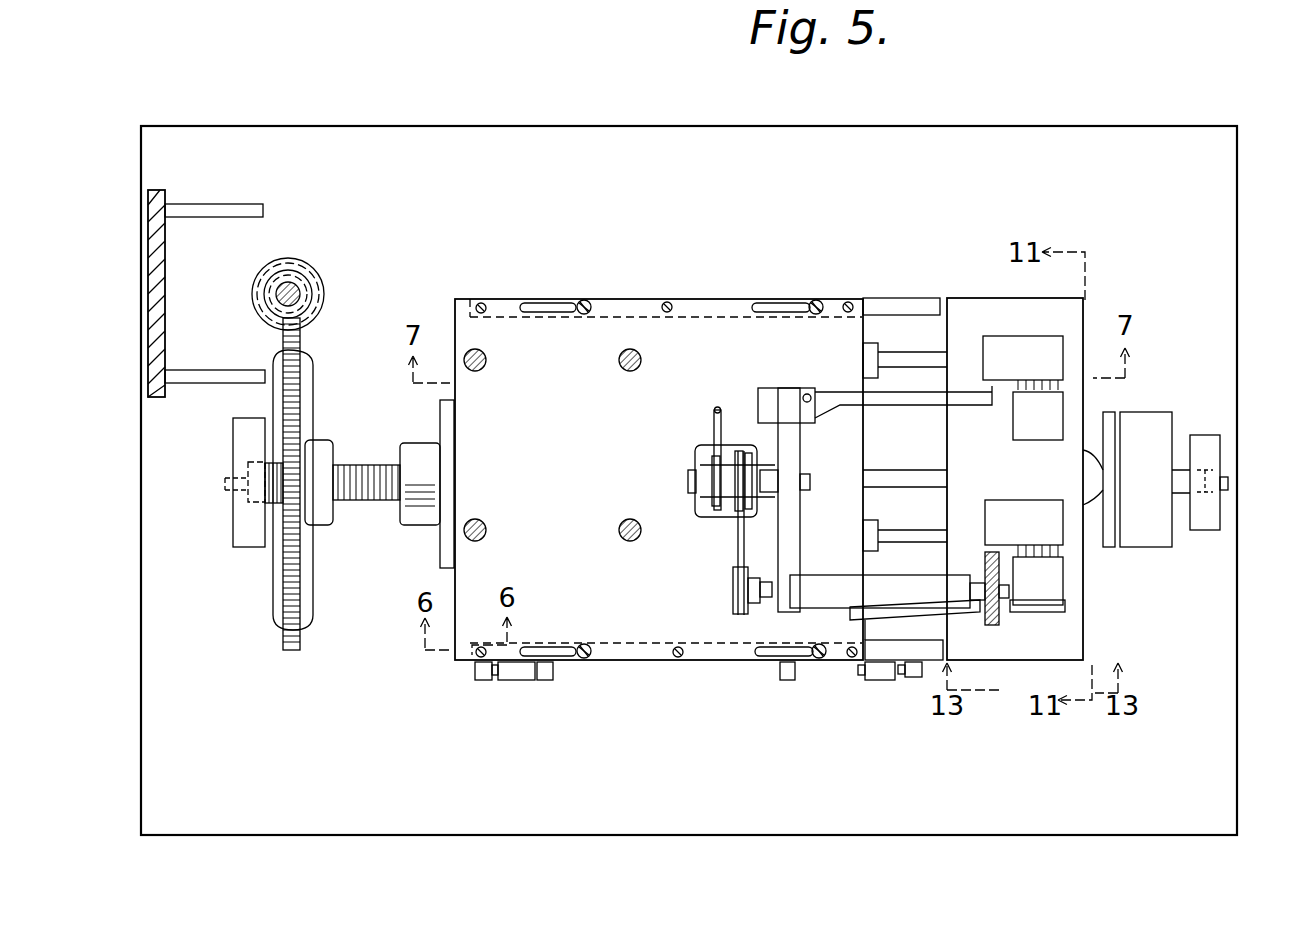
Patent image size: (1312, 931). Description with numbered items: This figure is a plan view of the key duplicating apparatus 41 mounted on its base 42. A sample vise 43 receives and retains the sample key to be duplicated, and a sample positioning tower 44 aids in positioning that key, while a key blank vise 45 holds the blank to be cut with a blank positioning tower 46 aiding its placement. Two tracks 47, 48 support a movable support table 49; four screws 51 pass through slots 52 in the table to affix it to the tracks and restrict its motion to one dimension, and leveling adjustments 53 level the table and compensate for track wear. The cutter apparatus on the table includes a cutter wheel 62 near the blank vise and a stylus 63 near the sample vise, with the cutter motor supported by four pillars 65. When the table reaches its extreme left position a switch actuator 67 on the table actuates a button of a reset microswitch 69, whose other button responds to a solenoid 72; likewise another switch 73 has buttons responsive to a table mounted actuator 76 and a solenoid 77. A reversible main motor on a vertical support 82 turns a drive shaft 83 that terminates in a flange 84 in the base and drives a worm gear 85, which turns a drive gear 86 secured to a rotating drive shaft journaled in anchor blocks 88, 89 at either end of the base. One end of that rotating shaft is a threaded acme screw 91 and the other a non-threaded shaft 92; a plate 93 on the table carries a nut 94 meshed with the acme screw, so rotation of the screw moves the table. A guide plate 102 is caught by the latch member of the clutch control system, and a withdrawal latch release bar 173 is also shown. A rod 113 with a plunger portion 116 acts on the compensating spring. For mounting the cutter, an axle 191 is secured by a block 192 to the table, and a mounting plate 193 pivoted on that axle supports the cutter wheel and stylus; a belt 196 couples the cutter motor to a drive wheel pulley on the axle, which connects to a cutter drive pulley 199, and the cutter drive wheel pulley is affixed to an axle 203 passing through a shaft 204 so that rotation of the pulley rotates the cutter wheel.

The key duplicating apparatus 41 is at (1100, 95).
The base 42 is at (1188, 138).
The sample vise 43 is at (1063, 345).
The sample positioning tower 44 is at (1063, 412).
The key blank vise 45 is at (1063, 518).
The blank positioning tower 46 is at (1063, 570).
The track 47 is at (928, 665).
The track 48 is at (897, 300).
The movable support table 49 is at (450, 318).
The screws 51 is at (585, 300).
The slots 52 is at (540, 304).
The leveling adjustments 53 is at (480, 303).
The cutter wheel 62 is at (1005, 612).
The stylus 63 is at (962, 345).
The pillars 65 is at (624, 372).
The switch actuator 67 is at (550, 682).
The reset microswitch 69 is at (510, 682).
The solenoid 72 is at (480, 682).
The switch 73 is at (880, 682).
The table mounted actuator 76 is at (785, 682).
The solenoid 77 is at (912, 680).
The vertical support 82 is at (166, 278).
The drive shaft 83 is at (297, 283).
The flange 84 is at (322, 284).
The worm gear 85 is at (305, 300).
The drive gear 86 is at (285, 640).
The anchor block 88 is at (248, 545).
The anchor block 89 is at (1215, 460).
The threaded acme screw 91 is at (355, 465).
The non-threaded shaft 92 is at (885, 482).
The plate 93 is at (444, 538).
The nut 94 is at (413, 515).
The guide plate 102 is at (1076, 635).
The rod 113 is at (897, 360).
The plunger portion 116 is at (868, 352).
The withdrawal latch release bar 173 is at (985, 626).
The axle 191 is at (690, 480).
The block 192 is at (767, 445).
The mounting plate 193 is at (792, 538).
The belt 196 is at (712, 434).
The cutter drive pulley 199 is at (767, 463).
The axle 203 is at (737, 590).
The shaft 204 is at (815, 588).